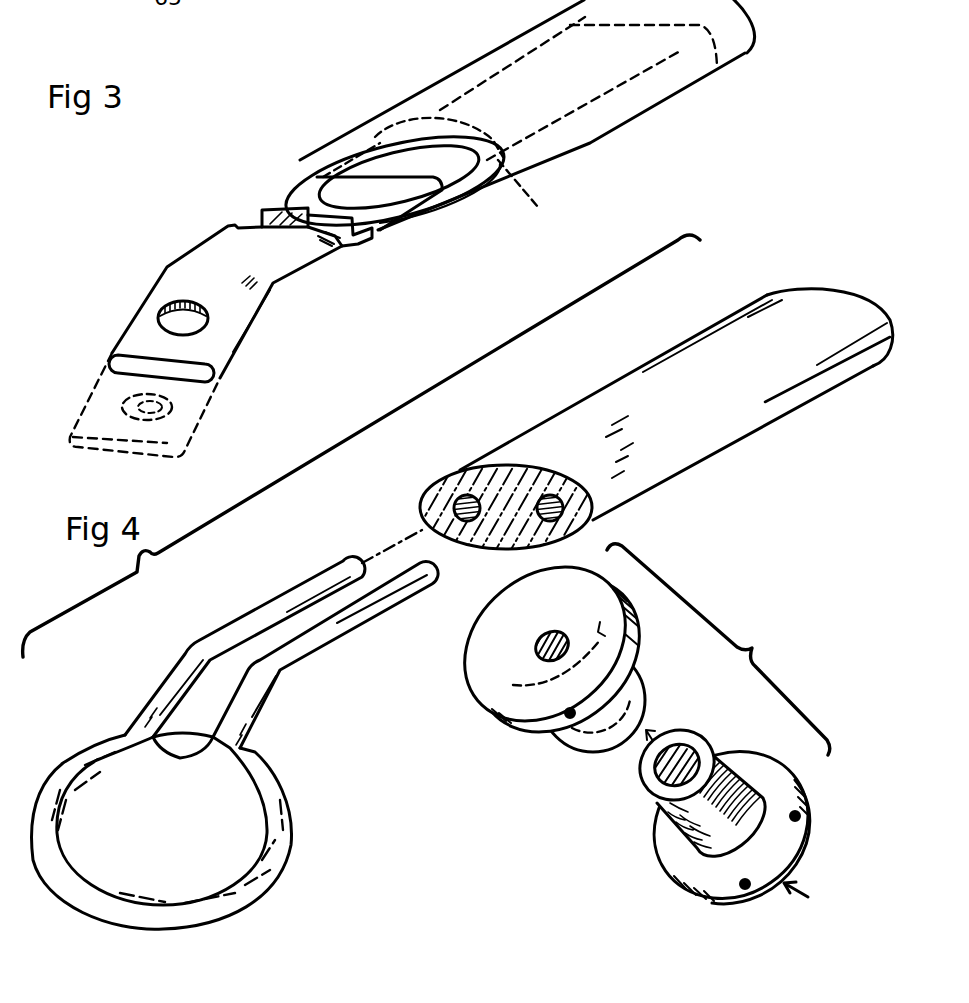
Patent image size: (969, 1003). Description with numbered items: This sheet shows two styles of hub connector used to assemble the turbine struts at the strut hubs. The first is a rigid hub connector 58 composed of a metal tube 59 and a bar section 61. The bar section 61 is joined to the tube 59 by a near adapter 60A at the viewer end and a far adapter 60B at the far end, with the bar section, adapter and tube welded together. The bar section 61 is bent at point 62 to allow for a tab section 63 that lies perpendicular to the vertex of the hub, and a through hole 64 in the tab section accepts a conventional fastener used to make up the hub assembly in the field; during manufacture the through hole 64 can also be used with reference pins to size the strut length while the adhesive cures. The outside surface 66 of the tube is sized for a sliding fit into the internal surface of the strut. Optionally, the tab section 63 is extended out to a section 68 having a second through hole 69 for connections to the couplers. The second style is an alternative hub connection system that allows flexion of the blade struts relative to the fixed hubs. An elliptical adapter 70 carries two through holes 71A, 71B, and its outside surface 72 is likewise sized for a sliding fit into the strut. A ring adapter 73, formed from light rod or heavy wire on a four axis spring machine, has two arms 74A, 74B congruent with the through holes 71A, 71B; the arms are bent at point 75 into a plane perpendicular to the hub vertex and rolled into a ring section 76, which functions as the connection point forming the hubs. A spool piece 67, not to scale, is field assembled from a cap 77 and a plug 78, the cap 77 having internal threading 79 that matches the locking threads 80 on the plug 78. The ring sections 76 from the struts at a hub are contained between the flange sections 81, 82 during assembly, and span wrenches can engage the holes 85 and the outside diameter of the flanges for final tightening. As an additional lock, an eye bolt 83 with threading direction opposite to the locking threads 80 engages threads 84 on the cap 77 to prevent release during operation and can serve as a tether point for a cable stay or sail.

In FIG. 3, the rigid hub connector 58 is at (405, 110).
In FIG. 3, the metal tube 59 is at (303, 167).
In FIG. 3, the near adapter 60A is at (520, 187).
In FIG. 3, the far adapter 60B is at (740, 57).
In FIG. 3, the bar section 61 is at (305, 197).
In FIG. 3, the bend point 62 is at (280, 293).
In FIG. 3, the tab section 63 is at (167, 290).
In FIG. 3, the through hole 64 is at (183, 325).
In FIG. 3, the outside surface 66 is at (536, 40).
In FIG. 4, the spool piece 67 is at (800, 633).
In FIG. 3, the extended section 68 is at (103, 403).
In FIG. 3, the second through hole 69 is at (187, 407).
In FIG. 4, the elliptical adapter 70 is at (747, 437).
In FIG. 4, the through hole 71A is at (457, 500).
In FIG. 4, the through hole 71B is at (550, 497).
In FIG. 4, the outside surface 72 is at (687, 353).
In FIG. 4, the ring adapter 73 is at (163, 703).
In FIG. 4, the arm 74A is at (263, 607).
In FIG. 4, the arm 74B is at (327, 643).
In FIG. 4, the bend point 75 is at (280, 682).
In FIG. 4, the ring section 76 is at (223, 895).
In FIG. 4, the cap 77 is at (577, 740).
In FIG. 4, the plug 78 is at (653, 790).
In FIG. 4, the internal threading 79 is at (660, 672).
In FIG. 4, the locking threads 80 is at (730, 753).
In FIG. 4, the flange section 81 is at (503, 693).
In FIG. 4, the flange section 82 is at (690, 885).
In FIG. 4, the eye bolt 83 is at (815, 902).
In FIG. 4, the threads 84 is at (553, 630).
In FIG. 4, the holes 85 is at (747, 893).